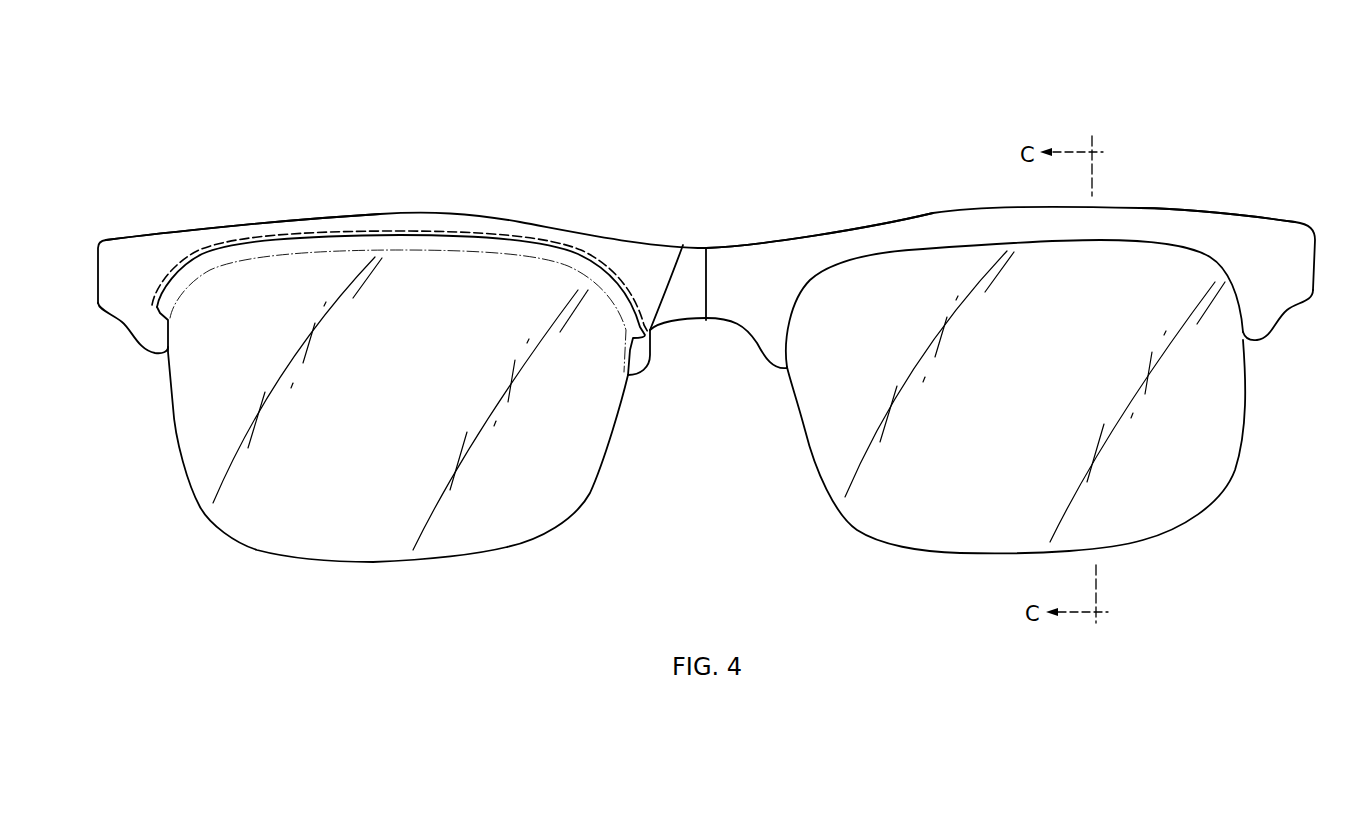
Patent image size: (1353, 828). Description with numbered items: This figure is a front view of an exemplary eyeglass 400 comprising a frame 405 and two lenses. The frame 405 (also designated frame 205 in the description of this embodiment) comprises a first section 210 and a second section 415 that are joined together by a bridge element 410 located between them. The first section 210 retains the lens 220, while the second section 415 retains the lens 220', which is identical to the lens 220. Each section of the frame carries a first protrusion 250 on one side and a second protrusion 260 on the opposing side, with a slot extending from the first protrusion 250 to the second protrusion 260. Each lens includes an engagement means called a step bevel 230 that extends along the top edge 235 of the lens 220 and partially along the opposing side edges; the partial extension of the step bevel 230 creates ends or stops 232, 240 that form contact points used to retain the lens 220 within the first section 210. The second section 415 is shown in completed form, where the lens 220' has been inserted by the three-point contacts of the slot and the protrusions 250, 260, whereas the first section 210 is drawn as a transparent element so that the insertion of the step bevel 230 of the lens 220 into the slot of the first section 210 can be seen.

The eyeglass 400 is at (967, 117).
The frame 205 is at (443, 218).
The first section 210 is at (218, 230).
The frame 405 is at (820, 247).
The second section 415 is at (1157, 230).
The lens 220 is at (392, 424).
The lens 220' is at (1016, 419).
The step bevel 230 is at (515, 250).
The stop 232 is at (172, 301).
The top edge 235 is at (572, 260).
The stop 240 is at (683, 245).
The bridge element 410 is at (712, 322).
The first protrusion 250 is at (645, 360).
The second protrusion 260 is at (155, 332).